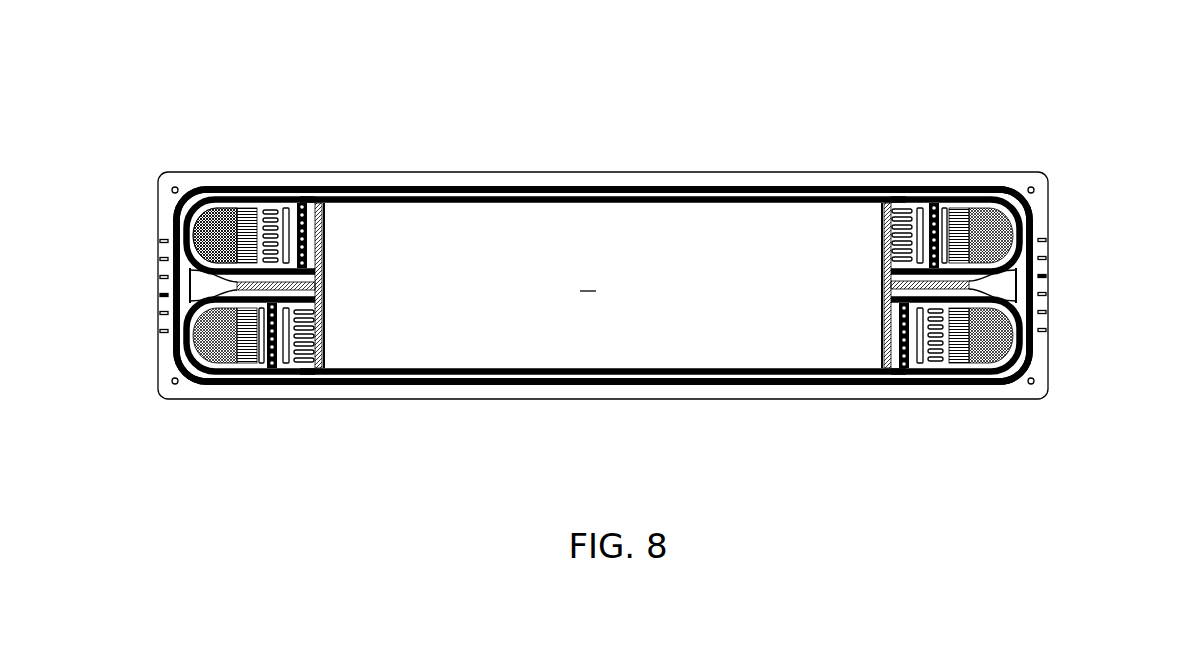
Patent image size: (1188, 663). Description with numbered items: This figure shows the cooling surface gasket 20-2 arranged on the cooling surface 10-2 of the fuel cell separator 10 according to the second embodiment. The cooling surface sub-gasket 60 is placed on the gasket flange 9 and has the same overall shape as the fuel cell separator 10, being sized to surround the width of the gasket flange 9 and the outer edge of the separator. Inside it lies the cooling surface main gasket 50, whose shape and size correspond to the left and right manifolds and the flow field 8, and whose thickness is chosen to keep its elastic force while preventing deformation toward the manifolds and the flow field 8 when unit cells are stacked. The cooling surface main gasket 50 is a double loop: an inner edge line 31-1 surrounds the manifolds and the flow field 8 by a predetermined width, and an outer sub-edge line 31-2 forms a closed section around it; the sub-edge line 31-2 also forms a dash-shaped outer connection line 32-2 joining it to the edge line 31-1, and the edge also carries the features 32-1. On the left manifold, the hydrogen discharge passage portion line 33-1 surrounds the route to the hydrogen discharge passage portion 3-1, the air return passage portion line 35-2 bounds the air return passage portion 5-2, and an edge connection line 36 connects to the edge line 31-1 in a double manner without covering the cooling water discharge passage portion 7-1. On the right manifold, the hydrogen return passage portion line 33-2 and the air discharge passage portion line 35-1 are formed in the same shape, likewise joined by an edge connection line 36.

The flow field 8 is at (603, 285).
The gasket flange 9 is at (447, 178).
The fuel cell separator 10 is at (800, 172).
The cooling surface 10-2 is at (677, 200).
The cooling surface gasket 20-2 is at (590, 68).
The cooling surface sub-gasket 60 is at (532, 185).
The cooling surface main gasket 50 is at (586, 194).
The hydrogen discharge passage portion 3-1 is at (220, 205).
The hydrogen discharge passage portion line 33-1 is at (255, 203).
The hydrogen return passage portion line 33-2 is at (978, 388).
The air discharge passage portion line 35-1 is at (985, 200).
The air return passage portion line 35-2 is at (237, 388).
The edge connection line 36 is at (302, 197).
The cooling water discharge passage portion 7-1 is at (197, 275).
The air return passage portion 5-2 is at (178, 362).
The edge line 31-1 is at (1033, 267).
The sub-edge line 31-2 is at (185, 268).
The first terminal tabs 32-1 is at (158, 307).
The outer connection line 32-2 is at (158, 287).